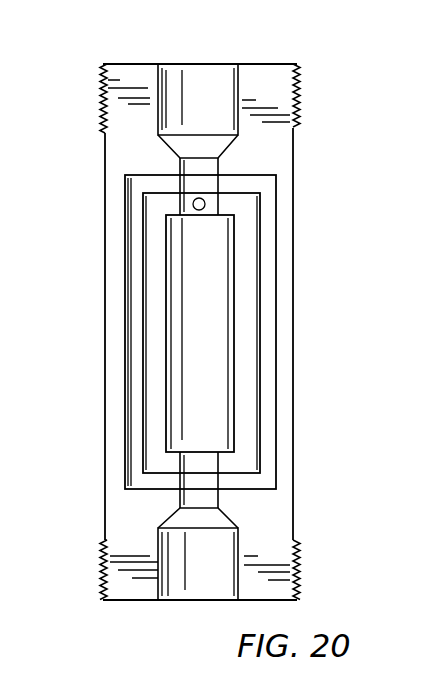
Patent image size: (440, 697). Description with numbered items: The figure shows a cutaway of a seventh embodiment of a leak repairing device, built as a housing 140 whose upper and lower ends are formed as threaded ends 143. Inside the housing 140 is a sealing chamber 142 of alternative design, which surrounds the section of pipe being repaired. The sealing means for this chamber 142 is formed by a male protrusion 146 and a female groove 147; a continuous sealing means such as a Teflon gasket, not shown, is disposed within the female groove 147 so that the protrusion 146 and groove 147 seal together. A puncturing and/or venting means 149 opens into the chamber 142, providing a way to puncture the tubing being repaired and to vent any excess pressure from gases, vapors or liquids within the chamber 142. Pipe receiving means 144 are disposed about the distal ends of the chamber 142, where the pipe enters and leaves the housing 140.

The housing 140 is at (74, 121).
The sealing chamber 142 is at (223, 322).
The threaded ends 143 is at (298, 92).
The pipe receiving means 144 is at (223, 75).
The male protrusion 146 is at (270, 186).
The female groove 147 is at (130, 190).
The puncturing and/or venting means 149 is at (203, 209).